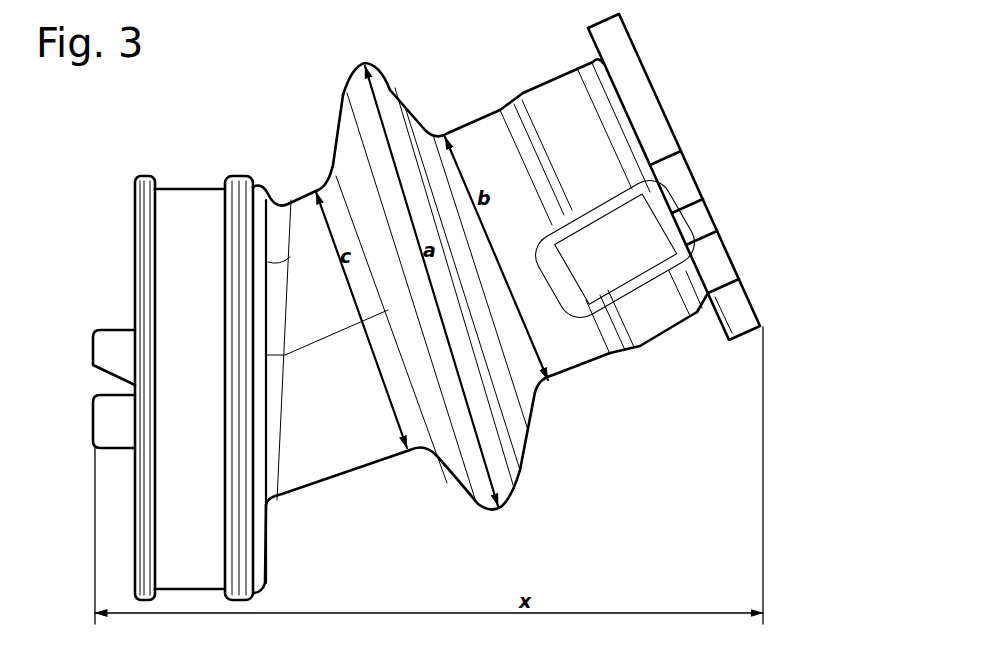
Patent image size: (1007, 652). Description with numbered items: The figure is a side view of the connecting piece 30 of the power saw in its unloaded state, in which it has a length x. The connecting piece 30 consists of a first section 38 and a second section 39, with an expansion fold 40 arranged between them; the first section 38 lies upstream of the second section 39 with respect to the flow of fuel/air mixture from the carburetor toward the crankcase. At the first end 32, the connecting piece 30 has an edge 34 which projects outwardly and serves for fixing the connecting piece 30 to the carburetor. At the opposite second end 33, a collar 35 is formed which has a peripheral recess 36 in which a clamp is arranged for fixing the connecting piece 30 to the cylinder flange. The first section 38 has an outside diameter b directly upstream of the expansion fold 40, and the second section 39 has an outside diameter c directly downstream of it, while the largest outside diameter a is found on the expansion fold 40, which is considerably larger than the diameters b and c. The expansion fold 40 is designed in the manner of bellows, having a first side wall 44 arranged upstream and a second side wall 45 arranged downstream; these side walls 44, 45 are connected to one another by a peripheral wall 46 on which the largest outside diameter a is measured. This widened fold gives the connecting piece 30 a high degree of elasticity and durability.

The connecting piece 30 is at (630, 442).
The first end 32 is at (770, 310).
The second end 33 is at (125, 292).
The edge 34 is at (615, 32).
The collar 35 is at (140, 197).
The peripheral recess 36 is at (189, 187).
The first section 38 is at (650, 328).
The second section 39 is at (333, 462).
The expansion fold 40 is at (505, 488).
The first side wall 44 is at (407, 106).
The second side wall 45 is at (336, 133).
The peripheral wall 46 is at (360, 66).